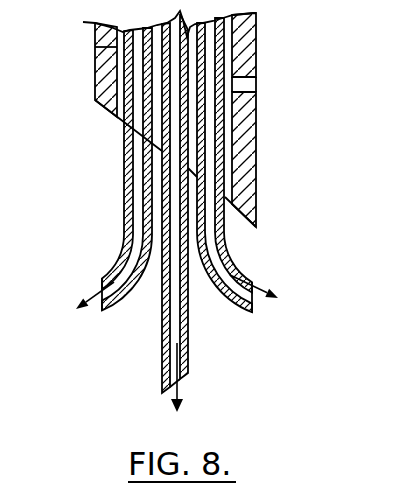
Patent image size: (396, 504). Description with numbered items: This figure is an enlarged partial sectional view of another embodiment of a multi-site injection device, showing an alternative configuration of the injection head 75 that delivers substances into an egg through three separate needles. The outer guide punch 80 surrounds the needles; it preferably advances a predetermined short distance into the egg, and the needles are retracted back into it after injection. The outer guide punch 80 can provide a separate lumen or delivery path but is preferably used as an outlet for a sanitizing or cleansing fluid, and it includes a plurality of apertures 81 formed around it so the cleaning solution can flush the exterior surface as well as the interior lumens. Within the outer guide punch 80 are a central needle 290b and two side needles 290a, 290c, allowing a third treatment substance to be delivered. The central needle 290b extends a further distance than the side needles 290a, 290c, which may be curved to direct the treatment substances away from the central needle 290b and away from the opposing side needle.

The injection head 75 is at (278, 91).
The outer guide punch 80 is at (97, 80).
The apertures 81 is at (110, 40).
The side needle 290a is at (112, 266).
The central needle 290b is at (192, 335).
The side needle 290c is at (238, 262).